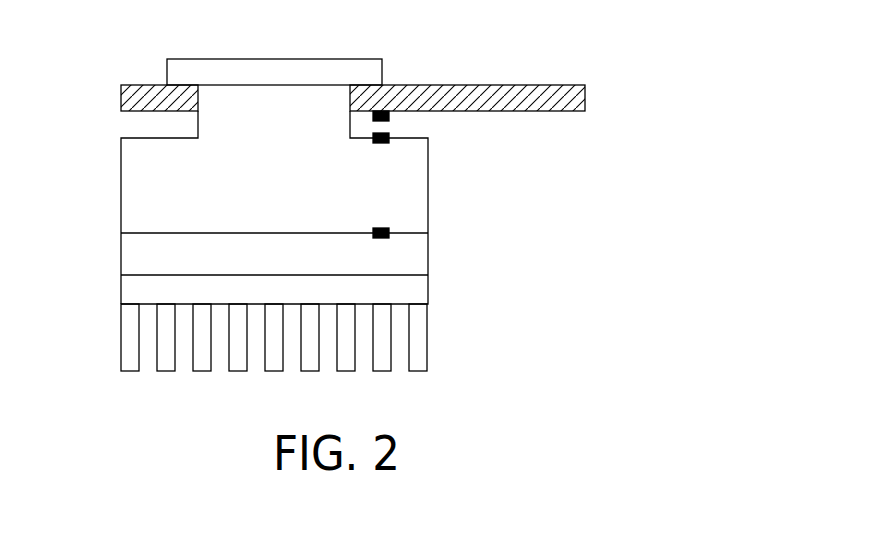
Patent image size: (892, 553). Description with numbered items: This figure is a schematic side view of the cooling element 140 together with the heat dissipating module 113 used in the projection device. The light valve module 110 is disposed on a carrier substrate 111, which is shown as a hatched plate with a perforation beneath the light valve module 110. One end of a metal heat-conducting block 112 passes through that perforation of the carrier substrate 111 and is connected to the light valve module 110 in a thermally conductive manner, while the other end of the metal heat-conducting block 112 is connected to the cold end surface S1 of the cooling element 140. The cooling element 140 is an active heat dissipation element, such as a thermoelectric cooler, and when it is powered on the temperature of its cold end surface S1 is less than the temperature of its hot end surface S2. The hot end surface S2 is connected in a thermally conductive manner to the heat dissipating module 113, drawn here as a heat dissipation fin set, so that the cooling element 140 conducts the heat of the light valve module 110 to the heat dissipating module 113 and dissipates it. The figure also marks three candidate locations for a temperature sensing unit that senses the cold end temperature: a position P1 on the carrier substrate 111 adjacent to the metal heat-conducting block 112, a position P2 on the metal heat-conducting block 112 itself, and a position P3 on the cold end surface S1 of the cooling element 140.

The light valve module 110 is at (367, 59).
The carrier substrate 111 is at (532, 85).
The metal heat-conducting block 112 is at (428, 195).
The heat dissipating module 113 is at (428, 297).
The cooling element 140 is at (428, 265).
The position P1 is at (389, 116).
The position P2 is at (383, 143).
The position P3 is at (384, 228).
The cold end surface S1 is at (150, 233).
The hot end surface S2 is at (153, 275).